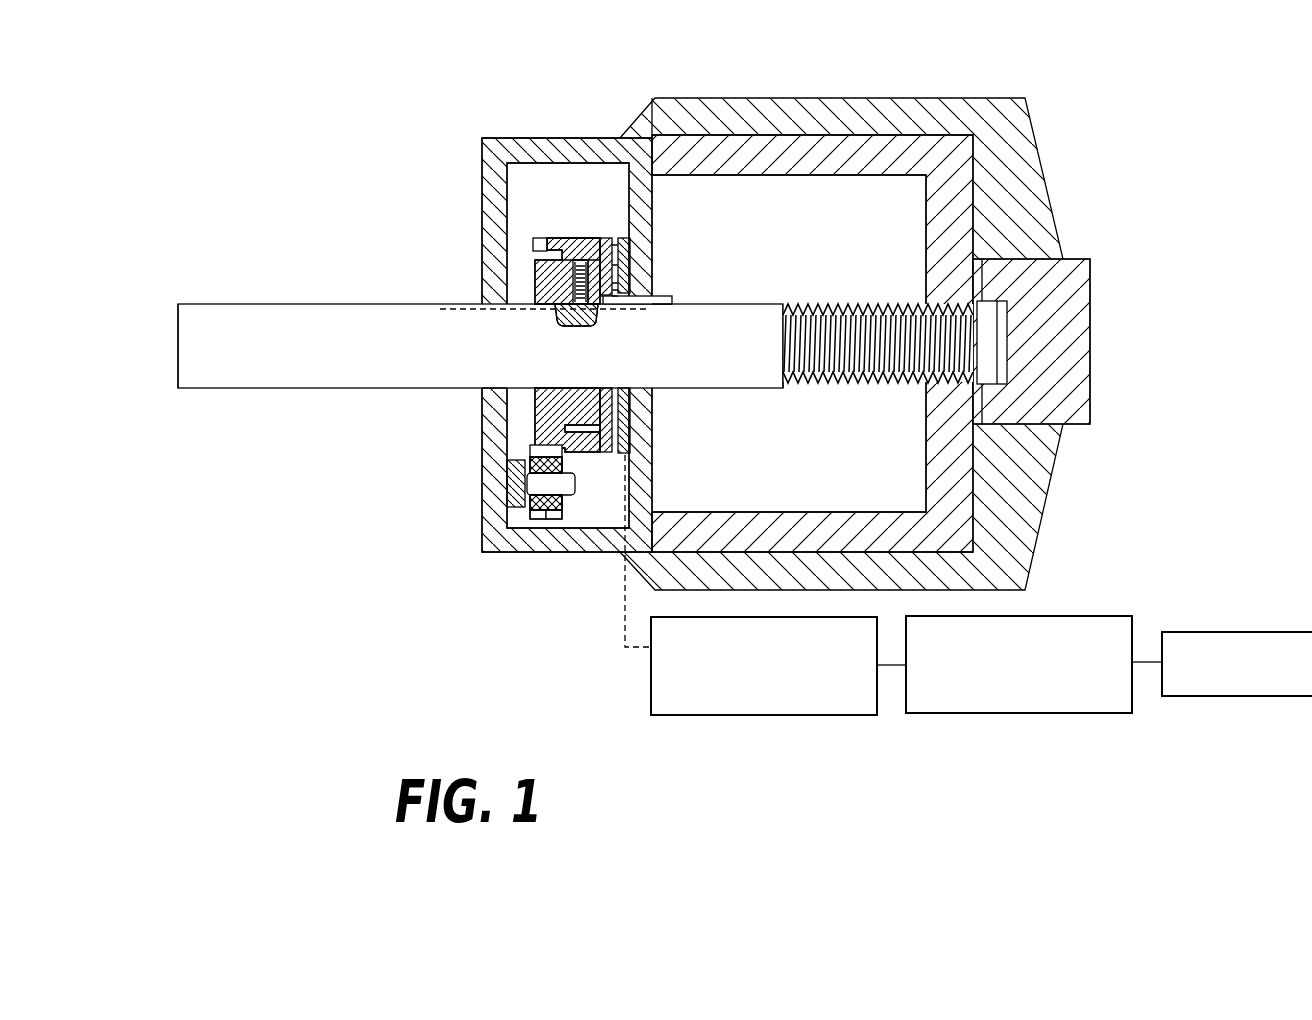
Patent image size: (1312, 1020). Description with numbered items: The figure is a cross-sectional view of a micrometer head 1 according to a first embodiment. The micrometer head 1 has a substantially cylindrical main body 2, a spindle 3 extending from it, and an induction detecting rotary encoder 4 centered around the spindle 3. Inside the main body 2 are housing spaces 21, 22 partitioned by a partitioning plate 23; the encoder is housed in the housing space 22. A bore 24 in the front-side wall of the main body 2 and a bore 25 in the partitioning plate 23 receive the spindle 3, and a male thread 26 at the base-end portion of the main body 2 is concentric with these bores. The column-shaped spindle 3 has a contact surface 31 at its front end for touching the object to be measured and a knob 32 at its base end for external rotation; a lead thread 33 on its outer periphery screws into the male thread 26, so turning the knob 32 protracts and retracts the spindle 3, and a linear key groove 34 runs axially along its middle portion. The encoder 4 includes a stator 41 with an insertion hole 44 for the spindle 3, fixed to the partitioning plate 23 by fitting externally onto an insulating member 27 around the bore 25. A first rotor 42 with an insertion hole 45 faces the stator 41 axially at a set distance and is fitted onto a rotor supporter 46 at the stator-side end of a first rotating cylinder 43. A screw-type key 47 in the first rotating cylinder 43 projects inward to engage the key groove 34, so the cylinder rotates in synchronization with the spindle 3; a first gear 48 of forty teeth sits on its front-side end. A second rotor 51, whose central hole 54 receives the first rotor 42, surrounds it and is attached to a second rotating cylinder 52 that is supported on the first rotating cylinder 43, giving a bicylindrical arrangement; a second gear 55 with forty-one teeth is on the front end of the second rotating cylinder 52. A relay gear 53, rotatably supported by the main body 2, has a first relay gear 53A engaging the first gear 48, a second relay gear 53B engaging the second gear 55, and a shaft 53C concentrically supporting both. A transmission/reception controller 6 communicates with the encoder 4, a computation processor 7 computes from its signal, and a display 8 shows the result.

The micrometer head 1 is at (943, 73).
The main body 2 is at (773, 148).
The housing space 21 is at (830, 210).
The housing space 22 is at (598, 501).
The partitioning plate 23 is at (652, 457).
The bore 24 is at (490, 387).
The bore 25 is at (665, 304).
The male thread 26 is at (920, 320).
The insulating member 27 is at (638, 304).
The spindle 3 is at (745, 388).
The contact surface 31 is at (178, 326).
The knob 32 is at (1092, 350).
The lead thread 33 is at (850, 384).
The key groove 34 is at (447, 309).
The induction detecting rotary encoder 4 is at (522, 199).
The stator 41 is at (623, 240).
The first rotor 42 is at (620, 284).
The first rotating cylinder 43 is at (537, 292).
The insertion hole 44 is at (662, 297).
The insertion hole 45 is at (604, 303).
The rotor supporter 46 is at (598, 305).
The key 47 is at (560, 312).
The first gear 48 is at (540, 245).
The second rotor 51 is at (606, 238).
The second rotating cylinder 52 is at (576, 238).
The relay gear 53 is at (432, 612).
The first relay gear 53A is at (535, 518).
The second relay gear 53B is at (550, 520).
The shaft 53C is at (560, 518).
The hole 54 is at (613, 266).
The second gear 55 is at (545, 240).
The transmission/reception controller 6 is at (743, 716).
The computation processor 7 is at (998, 714).
The display 8 is at (1240, 697).